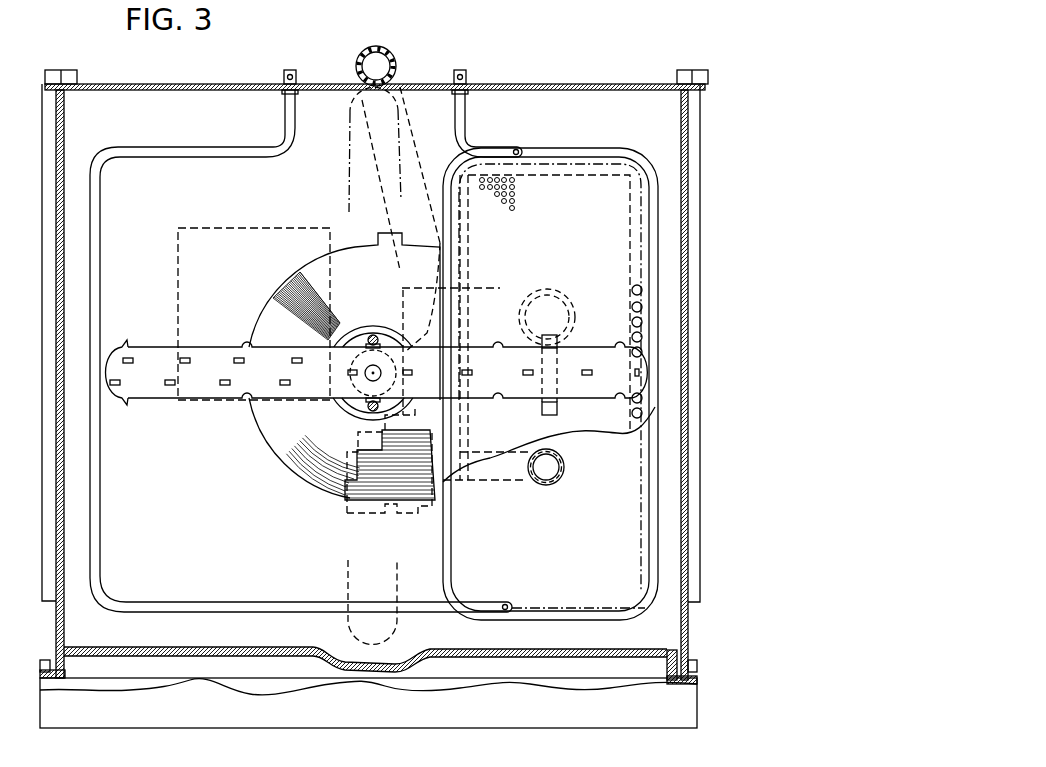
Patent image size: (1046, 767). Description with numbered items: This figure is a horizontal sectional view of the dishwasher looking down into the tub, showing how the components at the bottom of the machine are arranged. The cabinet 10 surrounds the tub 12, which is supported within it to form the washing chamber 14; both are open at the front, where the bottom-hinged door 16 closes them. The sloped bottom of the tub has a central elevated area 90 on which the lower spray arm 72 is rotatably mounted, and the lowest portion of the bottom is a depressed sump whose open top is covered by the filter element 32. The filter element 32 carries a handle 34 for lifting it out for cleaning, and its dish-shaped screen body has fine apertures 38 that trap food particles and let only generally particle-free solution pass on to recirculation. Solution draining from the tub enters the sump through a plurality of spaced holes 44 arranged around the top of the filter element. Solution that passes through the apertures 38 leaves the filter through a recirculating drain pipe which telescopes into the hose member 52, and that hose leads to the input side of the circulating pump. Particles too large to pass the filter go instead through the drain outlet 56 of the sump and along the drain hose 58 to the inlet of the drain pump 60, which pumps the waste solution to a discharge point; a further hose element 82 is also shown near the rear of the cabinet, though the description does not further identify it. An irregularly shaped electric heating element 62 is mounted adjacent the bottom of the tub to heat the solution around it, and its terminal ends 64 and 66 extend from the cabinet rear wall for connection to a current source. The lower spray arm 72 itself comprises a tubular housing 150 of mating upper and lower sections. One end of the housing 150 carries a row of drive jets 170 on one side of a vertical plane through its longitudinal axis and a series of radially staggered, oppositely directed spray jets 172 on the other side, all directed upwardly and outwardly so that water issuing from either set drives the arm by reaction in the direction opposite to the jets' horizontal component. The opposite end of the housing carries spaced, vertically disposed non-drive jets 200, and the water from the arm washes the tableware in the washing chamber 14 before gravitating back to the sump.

The cabinet 10 is at (612, 81).
The tub 12 is at (66, 138).
The washing chamber 14 is at (246, 197).
The door 16 is at (692, 705).
The filter element 32 is at (587, 204).
The handle 34 is at (558, 405).
The apertures 38 is at (513, 210).
The spaced holes 44 is at (632, 307).
The hose member 52 is at (500, 288).
The drain outlet 56 is at (548, 473).
The drain hose 58 is at (497, 483).
The drain pump 60 is at (376, 517).
The electric heating element 62 is at (160, 158).
The terminal end 64 is at (291, 69).
The terminal end 66 is at (469, 69).
The lower spray arm 72 is at (344, 399).
The drain hose 82 is at (390, 50).
The central elevated area 90 is at (369, 290).
The housing 150 is at (474, 346).
The drive jets 170 is at (237, 357).
The spray jets 172 is at (225, 386).
The non-drive jets 200 is at (586, 376).